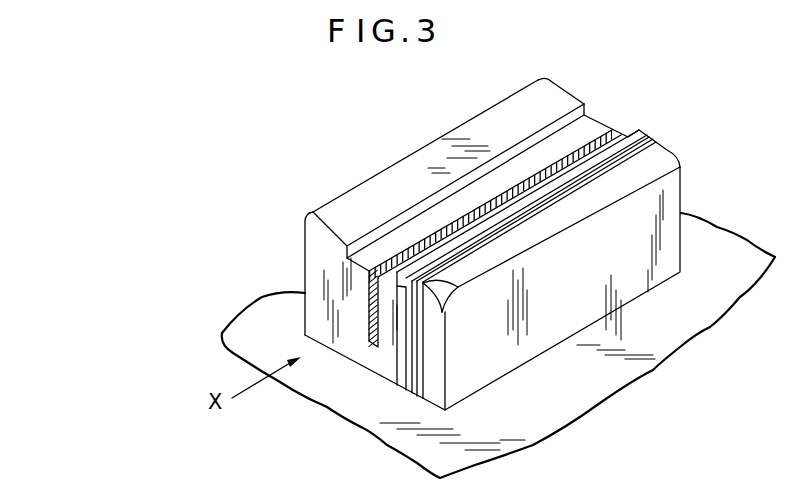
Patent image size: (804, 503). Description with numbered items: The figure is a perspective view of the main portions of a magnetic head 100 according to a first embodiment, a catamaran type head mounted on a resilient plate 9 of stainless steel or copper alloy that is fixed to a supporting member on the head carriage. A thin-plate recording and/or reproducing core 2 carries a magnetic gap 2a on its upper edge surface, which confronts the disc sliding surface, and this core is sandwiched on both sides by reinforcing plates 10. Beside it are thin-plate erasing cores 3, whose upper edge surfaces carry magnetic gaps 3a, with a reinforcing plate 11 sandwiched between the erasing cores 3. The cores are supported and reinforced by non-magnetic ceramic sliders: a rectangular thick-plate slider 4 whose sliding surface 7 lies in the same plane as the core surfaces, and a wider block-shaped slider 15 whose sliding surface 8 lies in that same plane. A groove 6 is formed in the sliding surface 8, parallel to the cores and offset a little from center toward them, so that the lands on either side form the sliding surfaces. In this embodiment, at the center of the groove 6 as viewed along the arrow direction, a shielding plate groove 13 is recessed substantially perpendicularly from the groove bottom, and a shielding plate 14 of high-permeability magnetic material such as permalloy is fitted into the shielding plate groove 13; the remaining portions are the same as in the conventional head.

The recording and/or reproducing core 2 is at (594, 199).
The magnetic gap 2a is at (565, 205).
The erasing cores 3 is at (490, 242).
The magnetic gaps 3a is at (517, 225).
The slider 4 is at (675, 185).
The groove 6 is at (587, 108).
The sliding surface 7 is at (457, 291).
The sliding surface 8 is at (363, 193).
The resilient plate 9 is at (678, 330).
The reinforcing plates 10 is at (615, 160).
The reinforcing plate 11 is at (469, 253).
The shielding plate groove 13 is at (368, 320).
The shielding plate 14 is at (372, 345).
The slider 15 is at (317, 256).
The magnetic head 100 is at (694, 198).